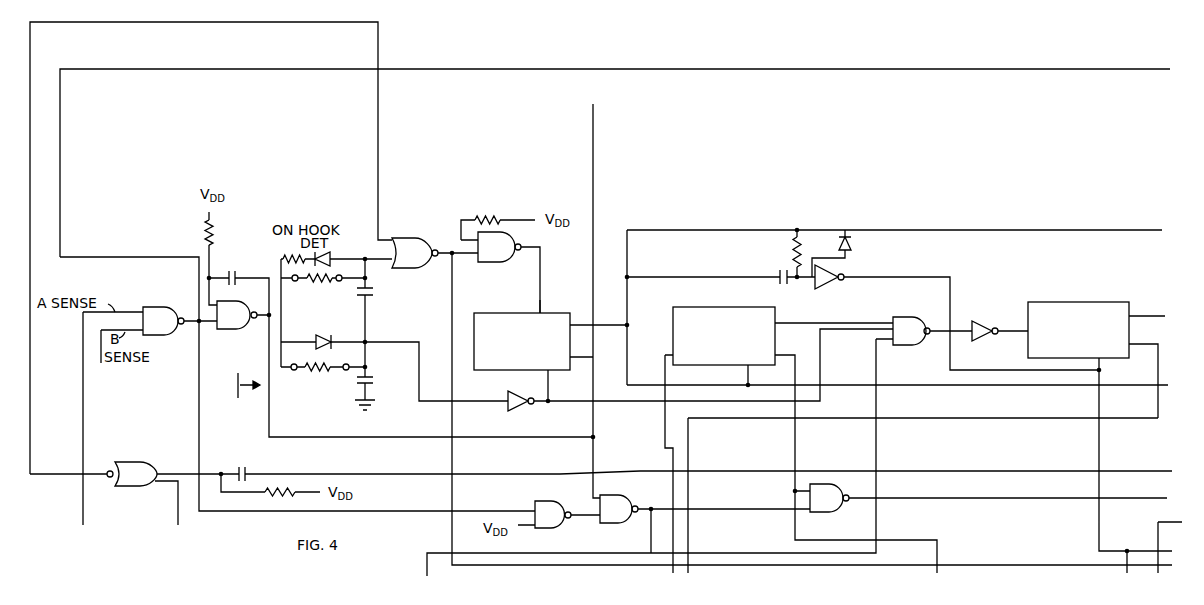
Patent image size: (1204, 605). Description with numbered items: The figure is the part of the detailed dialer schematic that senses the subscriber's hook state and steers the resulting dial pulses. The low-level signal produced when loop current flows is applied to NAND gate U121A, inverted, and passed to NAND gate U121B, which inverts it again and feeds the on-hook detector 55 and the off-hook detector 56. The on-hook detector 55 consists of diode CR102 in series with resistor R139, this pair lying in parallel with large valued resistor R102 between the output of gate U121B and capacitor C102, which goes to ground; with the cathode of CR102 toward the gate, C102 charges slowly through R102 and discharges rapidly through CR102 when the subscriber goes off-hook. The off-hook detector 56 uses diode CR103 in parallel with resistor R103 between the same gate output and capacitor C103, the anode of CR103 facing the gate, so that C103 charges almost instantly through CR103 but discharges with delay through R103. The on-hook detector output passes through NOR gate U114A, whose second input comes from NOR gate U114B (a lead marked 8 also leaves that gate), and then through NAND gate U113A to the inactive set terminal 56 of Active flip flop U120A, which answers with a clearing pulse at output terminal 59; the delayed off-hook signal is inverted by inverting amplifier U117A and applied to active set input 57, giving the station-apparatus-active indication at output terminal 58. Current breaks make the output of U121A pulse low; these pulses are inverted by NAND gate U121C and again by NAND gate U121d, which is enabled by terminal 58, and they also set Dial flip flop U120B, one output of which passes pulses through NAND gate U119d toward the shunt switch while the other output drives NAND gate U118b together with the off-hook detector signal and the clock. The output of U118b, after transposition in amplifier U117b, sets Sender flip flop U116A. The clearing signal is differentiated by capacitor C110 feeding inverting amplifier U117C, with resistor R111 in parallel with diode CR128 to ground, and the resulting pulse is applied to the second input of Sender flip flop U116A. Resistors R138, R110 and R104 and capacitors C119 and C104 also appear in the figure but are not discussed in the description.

The NAND gate U121A is at (178, 332).
The NAND gate U121B is at (247, 330).
The NAND gate U121C is at (559, 530).
The NAND gate U121d is at (638, 520).
The NOR gate U114A is at (425, 267).
The NOR gate U114B is at (123, 490).
The NAND gate U113A is at (499, 256).
The inverting amplifier U117A is at (524, 404).
The inverting amplifier U117C is at (826, 284).
The amplifier U117b is at (986, 310).
The NAND gate U118b is at (920, 309).
The NAND gate U119d is at (849, 512).
The Active flip flop U120A is at (540, 314).
The Dial flip flop U120B is at (777, 321).
The Sender flip flop U116A is at (1098, 302).
The resistor R138 is at (215, 225).
The resistor R139 is at (283, 251).
The large valued resistor R102 is at (317, 289).
The resistor R103 is at (315, 359).
The resistor R104 is at (264, 494).
The resistor R110 is at (508, 214).
The resistor R111 is at (794, 240).
The capacitor C119 is at (235, 268).
The capacitor C102 is at (360, 301).
The capacitor C103 is at (384, 382).
The capacitor C104 is at (248, 472).
The capacitor C110 is at (785, 285).
The diode CR102 is at (327, 258).
The diode CR103 is at (358, 326).
The diode CR128 is at (847, 245).
The output line 8 is at (166, 503).
The on-hook detector 55 is at (374, 294).
The off-hook detector 56 is at (540, 312).
The active set input 57 is at (546, 371).
The output terminal 58 is at (571, 359).
The output terminal 59 is at (569, 328).